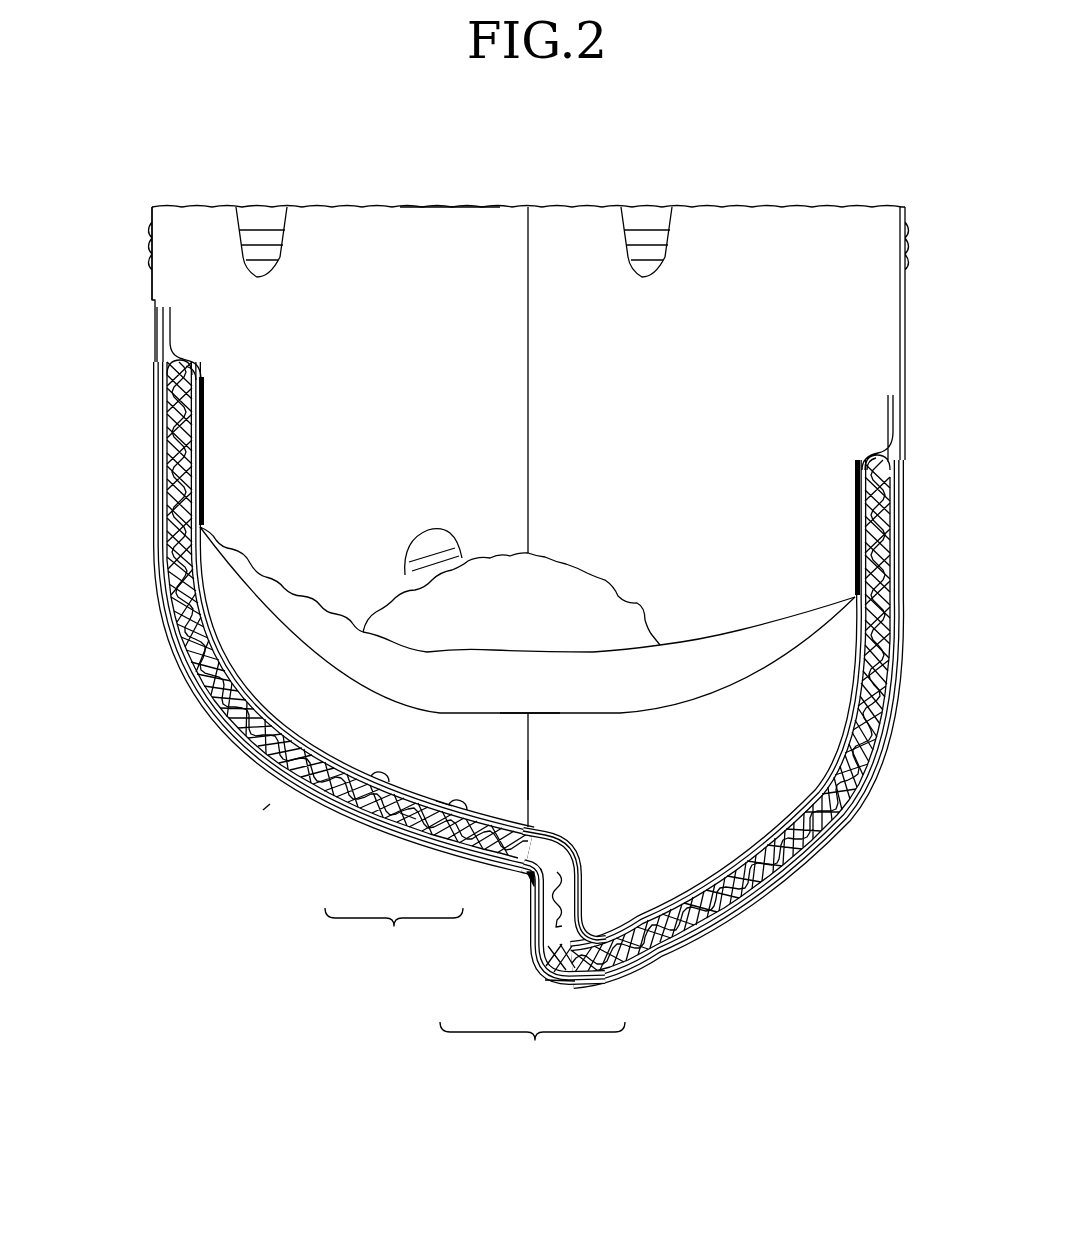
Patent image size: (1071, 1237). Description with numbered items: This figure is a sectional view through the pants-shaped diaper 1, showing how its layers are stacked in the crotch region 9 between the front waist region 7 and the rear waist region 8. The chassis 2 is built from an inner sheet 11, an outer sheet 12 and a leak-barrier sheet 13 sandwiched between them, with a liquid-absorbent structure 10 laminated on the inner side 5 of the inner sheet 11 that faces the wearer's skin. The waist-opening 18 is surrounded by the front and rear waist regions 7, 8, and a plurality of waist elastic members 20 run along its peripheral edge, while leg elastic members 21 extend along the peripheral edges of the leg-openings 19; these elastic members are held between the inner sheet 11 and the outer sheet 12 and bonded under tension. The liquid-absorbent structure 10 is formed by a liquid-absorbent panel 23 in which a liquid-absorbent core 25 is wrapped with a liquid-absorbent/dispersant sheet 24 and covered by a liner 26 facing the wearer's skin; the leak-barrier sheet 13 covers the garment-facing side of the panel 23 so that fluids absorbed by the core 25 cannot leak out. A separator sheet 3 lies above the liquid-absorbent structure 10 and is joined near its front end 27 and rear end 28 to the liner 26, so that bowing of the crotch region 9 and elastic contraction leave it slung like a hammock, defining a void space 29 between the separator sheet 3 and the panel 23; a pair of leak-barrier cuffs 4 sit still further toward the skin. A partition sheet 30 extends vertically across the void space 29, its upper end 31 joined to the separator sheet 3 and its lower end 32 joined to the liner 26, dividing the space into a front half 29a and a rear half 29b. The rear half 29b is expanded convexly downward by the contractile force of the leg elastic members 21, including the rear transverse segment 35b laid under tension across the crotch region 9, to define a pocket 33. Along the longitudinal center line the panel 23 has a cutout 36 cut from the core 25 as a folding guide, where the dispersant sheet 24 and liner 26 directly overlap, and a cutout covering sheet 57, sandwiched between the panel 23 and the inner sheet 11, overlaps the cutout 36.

The diaper 1 is at (890, 103).
The chassis 2 is at (864, 178).
The separator sheet 3 is at (290, 640).
The leak-barrier cuffs 4 is at (275, 582).
The inner side facing the wearer's skin 5 is at (553, 364).
The front waist region 7 is at (124, 272).
The rear waist region 8 is at (930, 274).
The crotch region 9 is at (250, 814).
The liquid-absorbent structure 10 is at (301, 712).
The inner sheet 11 is at (185, 652).
The outer sheet 12 is at (200, 695).
The leak-barrier sheet 13 is at (230, 727).
The waist-opening 18 is at (443, 235).
The leg-openings 19 is at (598, 595).
The waist elastic members 20 is at (274, 260).
The leg elastic members 21 is at (430, 556).
The liquid-absorbent panel 23 is at (394, 935).
The liquid-absorbent/dispersant sheet 24 is at (338, 812).
The liquid-absorbent core 25 is at (408, 818).
The liner facing the wearer's skin 26 is at (444, 806).
The front end 27 is at (205, 440).
The rear end 28 is at (855, 507).
The void space 29 is at (532, 1049).
The front half of the void space 29a is at (500, 803).
The rear half of the void space 29b is at (603, 900).
The partition sheet 30 is at (544, 773).
The upper end 31 is at (540, 714).
The lower end 32 is at (562, 838).
The pocket 33 is at (623, 912).
The rear transverse segment 35b is at (558, 899).
The cutout 36 is at (576, 894).
The cutout covering sheet 57 is at (540, 933).